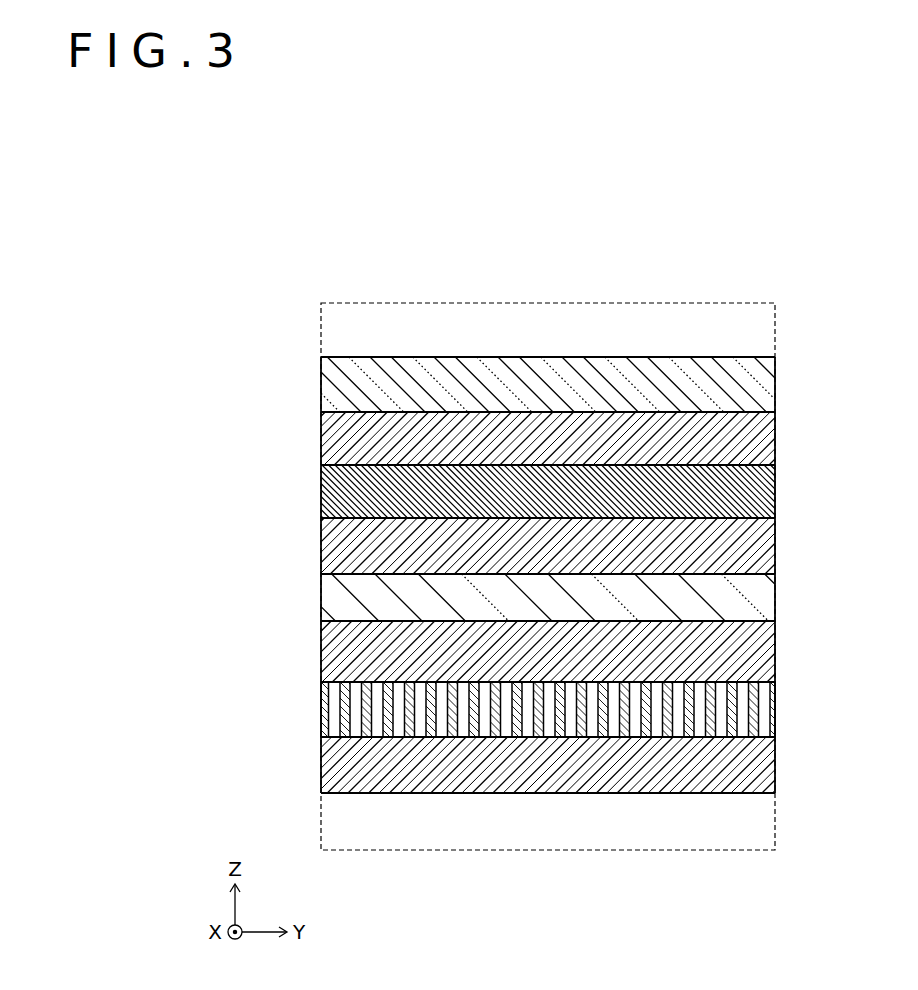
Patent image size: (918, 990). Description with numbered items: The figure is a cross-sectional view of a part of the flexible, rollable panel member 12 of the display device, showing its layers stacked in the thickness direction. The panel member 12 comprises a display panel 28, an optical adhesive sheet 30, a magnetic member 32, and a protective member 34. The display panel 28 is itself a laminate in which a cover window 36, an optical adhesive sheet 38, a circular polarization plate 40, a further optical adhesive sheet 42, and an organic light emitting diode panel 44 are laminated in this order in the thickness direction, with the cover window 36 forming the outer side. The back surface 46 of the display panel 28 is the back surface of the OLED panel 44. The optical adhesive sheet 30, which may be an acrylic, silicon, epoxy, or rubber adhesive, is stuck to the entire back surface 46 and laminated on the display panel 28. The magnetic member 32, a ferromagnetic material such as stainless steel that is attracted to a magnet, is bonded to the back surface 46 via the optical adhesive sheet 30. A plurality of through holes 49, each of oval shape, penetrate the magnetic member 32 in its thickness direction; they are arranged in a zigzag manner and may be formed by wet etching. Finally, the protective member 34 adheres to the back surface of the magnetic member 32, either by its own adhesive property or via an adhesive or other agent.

The panel member 12 is at (510, 555).
The display panel 28 is at (484, 489).
The optical adhesive sheet 30 is at (323, 650).
The magnetic member 32 is at (544, 709).
The protective member 34 is at (323, 763).
The cover window 36 is at (323, 382).
The optical adhesive sheet 38 is at (323, 436).
The circular polarization plate 40 is at (323, 490).
The optical adhesive sheet 42 is at (323, 548).
The organic light emitting diode (OLED) panel 44 is at (519, 597).
The back surface 46 is at (737, 624).
The through holes 49 is at (763, 711).